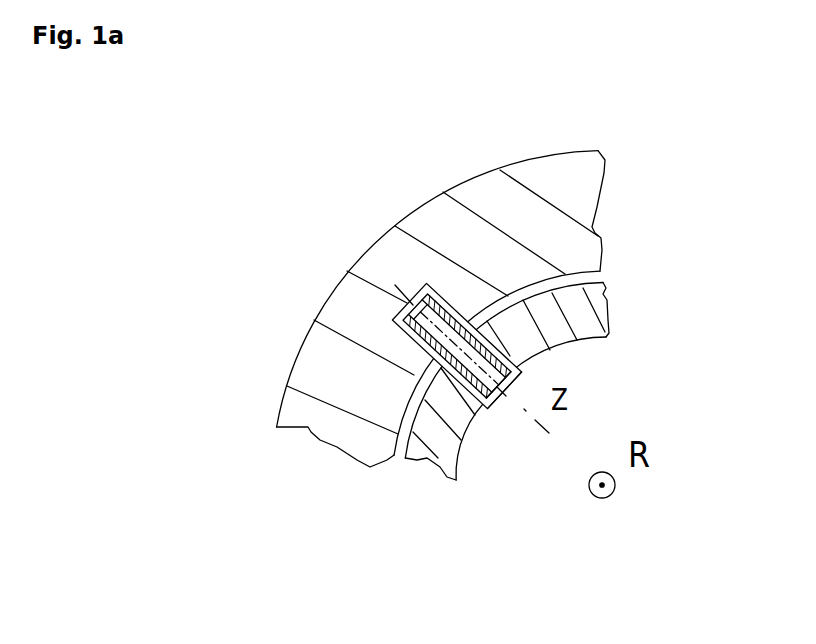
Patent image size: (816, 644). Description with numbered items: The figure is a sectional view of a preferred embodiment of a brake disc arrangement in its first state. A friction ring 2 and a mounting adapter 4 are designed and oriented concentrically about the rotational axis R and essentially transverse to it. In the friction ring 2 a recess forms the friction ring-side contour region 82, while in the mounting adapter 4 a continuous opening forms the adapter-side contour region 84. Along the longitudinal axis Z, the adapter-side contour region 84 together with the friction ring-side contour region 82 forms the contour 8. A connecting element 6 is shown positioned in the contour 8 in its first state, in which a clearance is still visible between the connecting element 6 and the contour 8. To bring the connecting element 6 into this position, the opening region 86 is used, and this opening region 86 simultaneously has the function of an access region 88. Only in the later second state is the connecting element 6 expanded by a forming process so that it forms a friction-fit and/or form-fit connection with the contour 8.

The friction ring 2 is at (588, 190).
The mounting adapter 4 is at (607, 317).
The connecting element 6 is at (497, 397).
The contour 8 is at (396, 358).
The friction ring-side contour region 82 is at (453, 300).
The adapter-side contour region 84 is at (514, 370).
The opening region 86 is at (518, 424).
The access region 88 is at (498, 385).